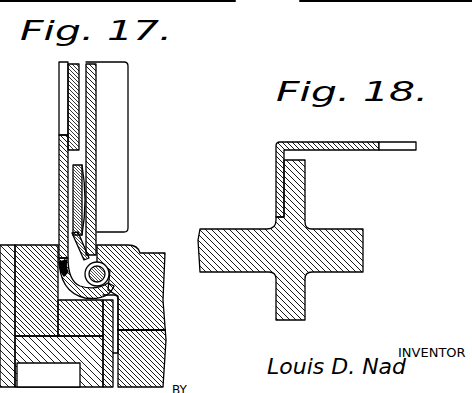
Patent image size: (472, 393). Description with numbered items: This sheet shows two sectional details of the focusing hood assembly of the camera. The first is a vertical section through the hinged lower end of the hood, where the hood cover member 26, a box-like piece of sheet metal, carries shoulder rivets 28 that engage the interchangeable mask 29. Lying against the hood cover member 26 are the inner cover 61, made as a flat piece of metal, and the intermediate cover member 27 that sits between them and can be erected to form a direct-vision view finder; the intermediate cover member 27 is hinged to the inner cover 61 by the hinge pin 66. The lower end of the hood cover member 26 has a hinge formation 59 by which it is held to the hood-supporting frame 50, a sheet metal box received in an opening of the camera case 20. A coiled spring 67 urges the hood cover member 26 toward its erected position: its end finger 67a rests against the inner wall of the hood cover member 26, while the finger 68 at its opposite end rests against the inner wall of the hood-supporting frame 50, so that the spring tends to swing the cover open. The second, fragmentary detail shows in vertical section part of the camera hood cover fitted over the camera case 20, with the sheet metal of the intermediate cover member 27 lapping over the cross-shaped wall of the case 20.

In FIG. 18, the camera case 20 is at (297, 232).
In FIG. 17, the hood cover member 26 is at (117, 83).
In FIG. 17, the intermediate cover member 27 is at (78, 82).
In FIG. 18, the intermediate cover member 27 is at (362, 150).
In FIG. 17, the shoulder rivets 28 is at (80, 194).
In FIG. 17, the mask 29 is at (68, 110).
In FIG. 17, the hood-supporting frame 50 is at (155, 354).
In FIG. 17, the hinge formation 59 is at (77, 283).
In FIG. 17, the inner cover 61 is at (92, 114).
In FIG. 17, the hinge pin 66 is at (103, 279).
In FIG. 17, the coiled spring 67 is at (108, 272).
In FIG. 17, the end finger 67a is at (73, 232).
In FIG. 17, the finger 68 is at (117, 349).